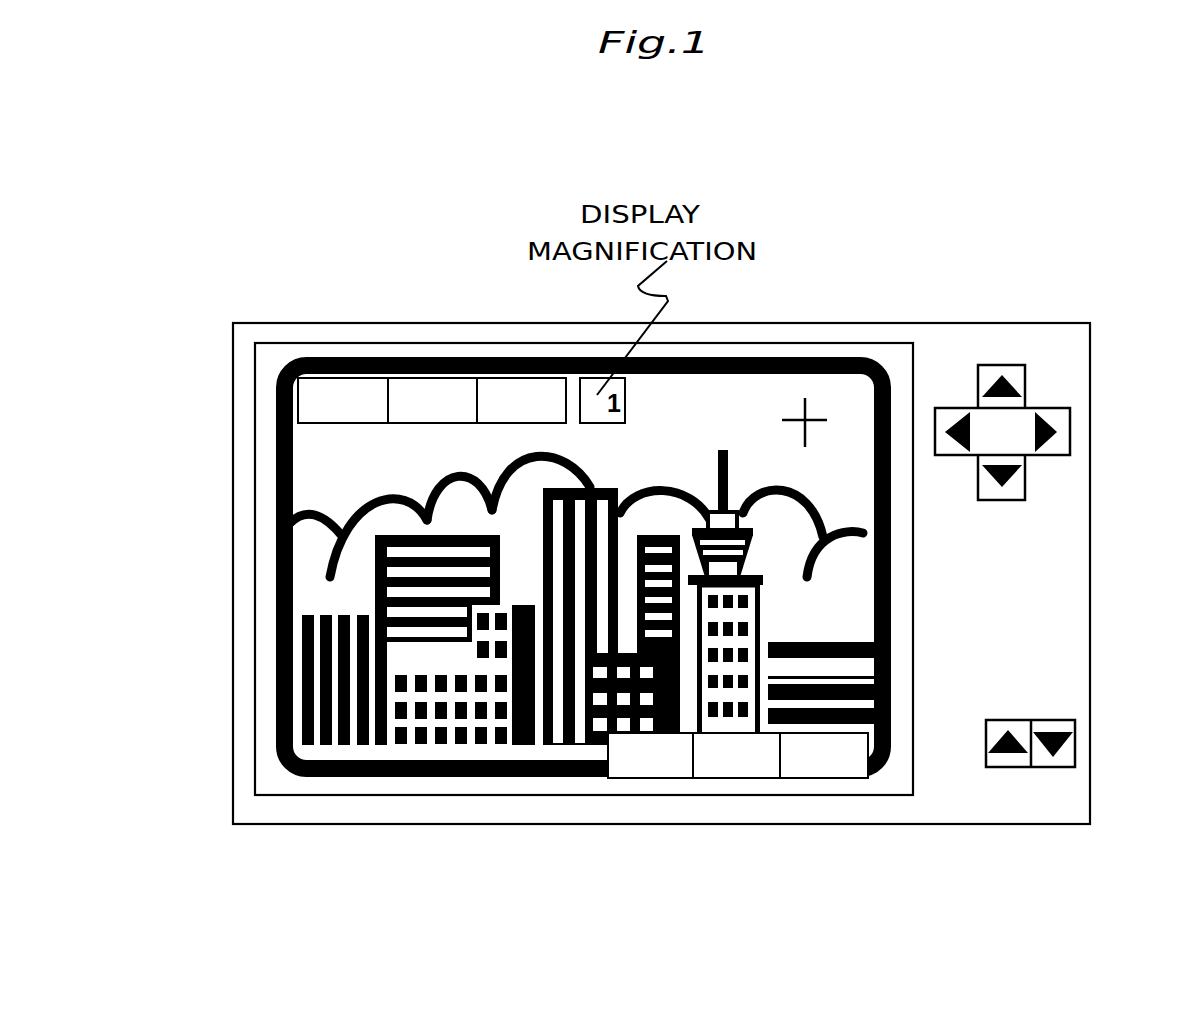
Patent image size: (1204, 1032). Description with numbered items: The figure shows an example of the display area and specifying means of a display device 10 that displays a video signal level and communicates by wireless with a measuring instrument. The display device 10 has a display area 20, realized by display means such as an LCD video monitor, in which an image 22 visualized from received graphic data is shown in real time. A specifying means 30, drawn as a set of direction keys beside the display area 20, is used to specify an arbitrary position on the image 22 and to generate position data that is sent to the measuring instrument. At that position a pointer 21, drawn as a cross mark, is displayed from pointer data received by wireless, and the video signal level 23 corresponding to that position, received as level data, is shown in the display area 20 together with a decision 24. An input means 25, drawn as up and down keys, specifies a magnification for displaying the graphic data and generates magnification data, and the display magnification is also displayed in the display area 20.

The display device 10 is at (292, 283).
The display area 20 is at (255, 795).
The pointer 21 is at (823, 420).
The image 22 is at (667, 423).
The video signal level 23 is at (347, 427).
The decision 24 is at (695, 778).
The input means 25 is at (1075, 753).
The specifying means 30 is at (1070, 425).